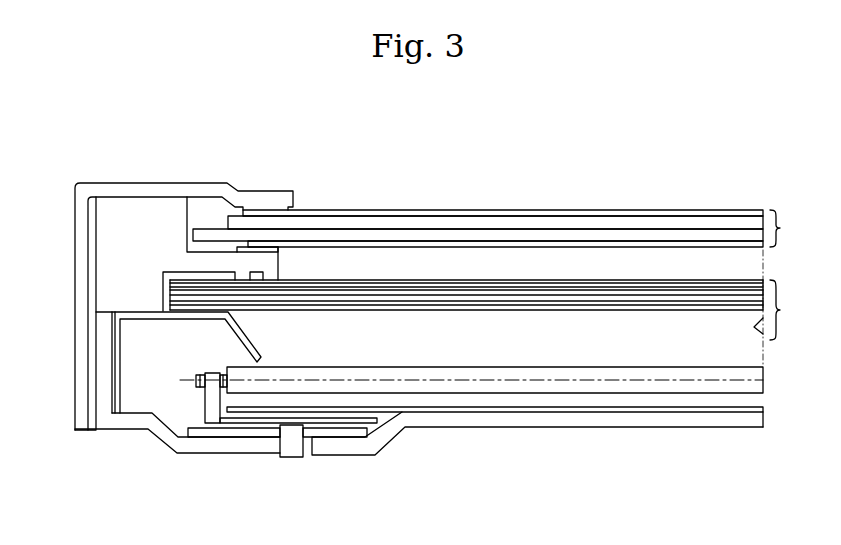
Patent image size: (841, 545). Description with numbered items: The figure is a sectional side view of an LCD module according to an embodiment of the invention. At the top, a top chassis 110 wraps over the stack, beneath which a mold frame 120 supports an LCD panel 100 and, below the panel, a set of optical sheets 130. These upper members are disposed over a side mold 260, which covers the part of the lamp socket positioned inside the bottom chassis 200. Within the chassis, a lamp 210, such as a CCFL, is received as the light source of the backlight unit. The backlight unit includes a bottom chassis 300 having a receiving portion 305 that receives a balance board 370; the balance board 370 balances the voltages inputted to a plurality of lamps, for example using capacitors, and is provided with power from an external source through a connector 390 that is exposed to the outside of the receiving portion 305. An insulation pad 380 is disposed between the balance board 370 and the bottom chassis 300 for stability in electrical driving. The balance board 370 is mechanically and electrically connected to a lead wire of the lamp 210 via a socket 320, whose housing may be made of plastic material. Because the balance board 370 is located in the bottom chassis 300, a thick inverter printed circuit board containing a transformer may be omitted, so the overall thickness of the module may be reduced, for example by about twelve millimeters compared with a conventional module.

The top chassis 110 is at (137, 191).
The mold frame 120 is at (118, 247).
The LCD panel 100 is at (505, 231).
The optical sheets 130 is at (490, 306).
The bottom chassis 200 is at (107, 375).
The side mold 260 is at (120, 348).
The lamp 210 is at (748, 377).
The socket 320 is at (207, 403).
The balance board 370 is at (355, 423).
The insulation pad 380 is at (220, 435).
The connector 390 is at (292, 445).
The receiving portion 305 is at (340, 447).
The bottom chassis 300 is at (468, 425).